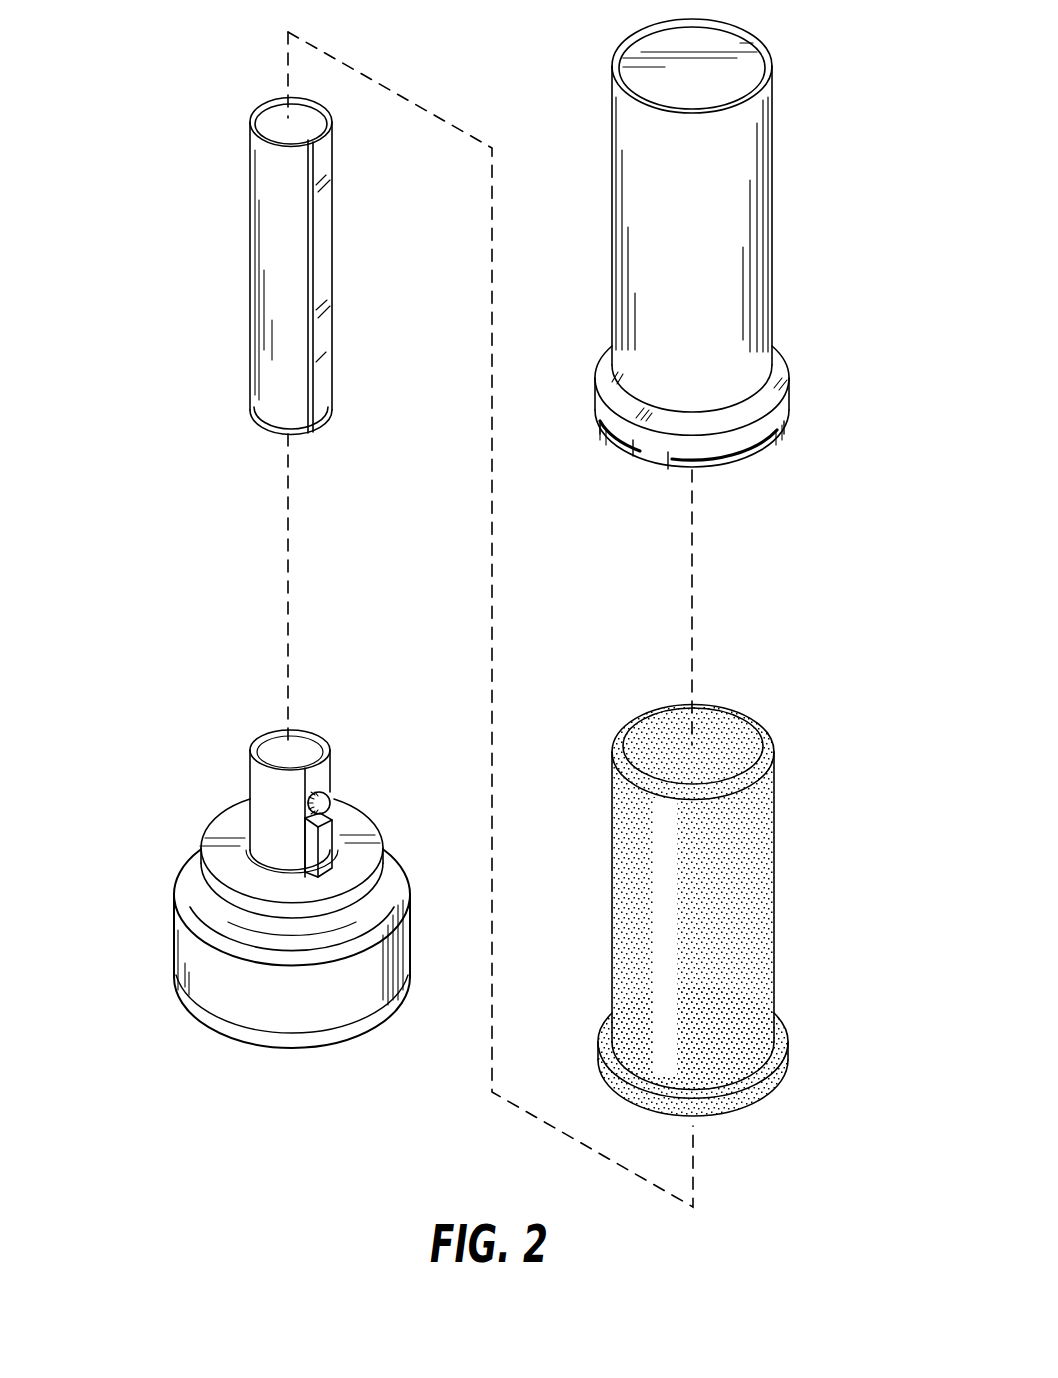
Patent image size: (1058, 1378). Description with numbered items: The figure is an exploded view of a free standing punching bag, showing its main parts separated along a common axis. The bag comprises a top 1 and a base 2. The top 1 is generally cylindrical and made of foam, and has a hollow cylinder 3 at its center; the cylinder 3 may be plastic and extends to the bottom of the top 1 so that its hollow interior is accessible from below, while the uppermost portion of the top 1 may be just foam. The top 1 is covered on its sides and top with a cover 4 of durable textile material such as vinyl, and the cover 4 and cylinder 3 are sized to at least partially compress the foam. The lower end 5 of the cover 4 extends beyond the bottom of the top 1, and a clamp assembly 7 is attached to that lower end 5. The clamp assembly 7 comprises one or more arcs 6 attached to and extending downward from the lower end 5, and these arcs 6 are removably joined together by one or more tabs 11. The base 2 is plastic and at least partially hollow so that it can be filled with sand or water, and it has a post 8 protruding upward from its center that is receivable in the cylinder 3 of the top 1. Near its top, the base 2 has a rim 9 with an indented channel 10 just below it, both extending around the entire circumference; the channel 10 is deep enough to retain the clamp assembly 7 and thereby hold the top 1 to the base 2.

The top 1 is at (755, 908).
The base 2 is at (215, 990).
The hollow cylinder 3 is at (269, 232).
The cover 4 is at (738, 200).
The lower end 5 is at (780, 410).
The arcs 6 is at (645, 455).
The clamp assembly 7 is at (687, 286).
The post 8 is at (262, 793).
The rim 9 is at (205, 880).
The channel 10 is at (214, 903).
The tabs 11 is at (603, 430).